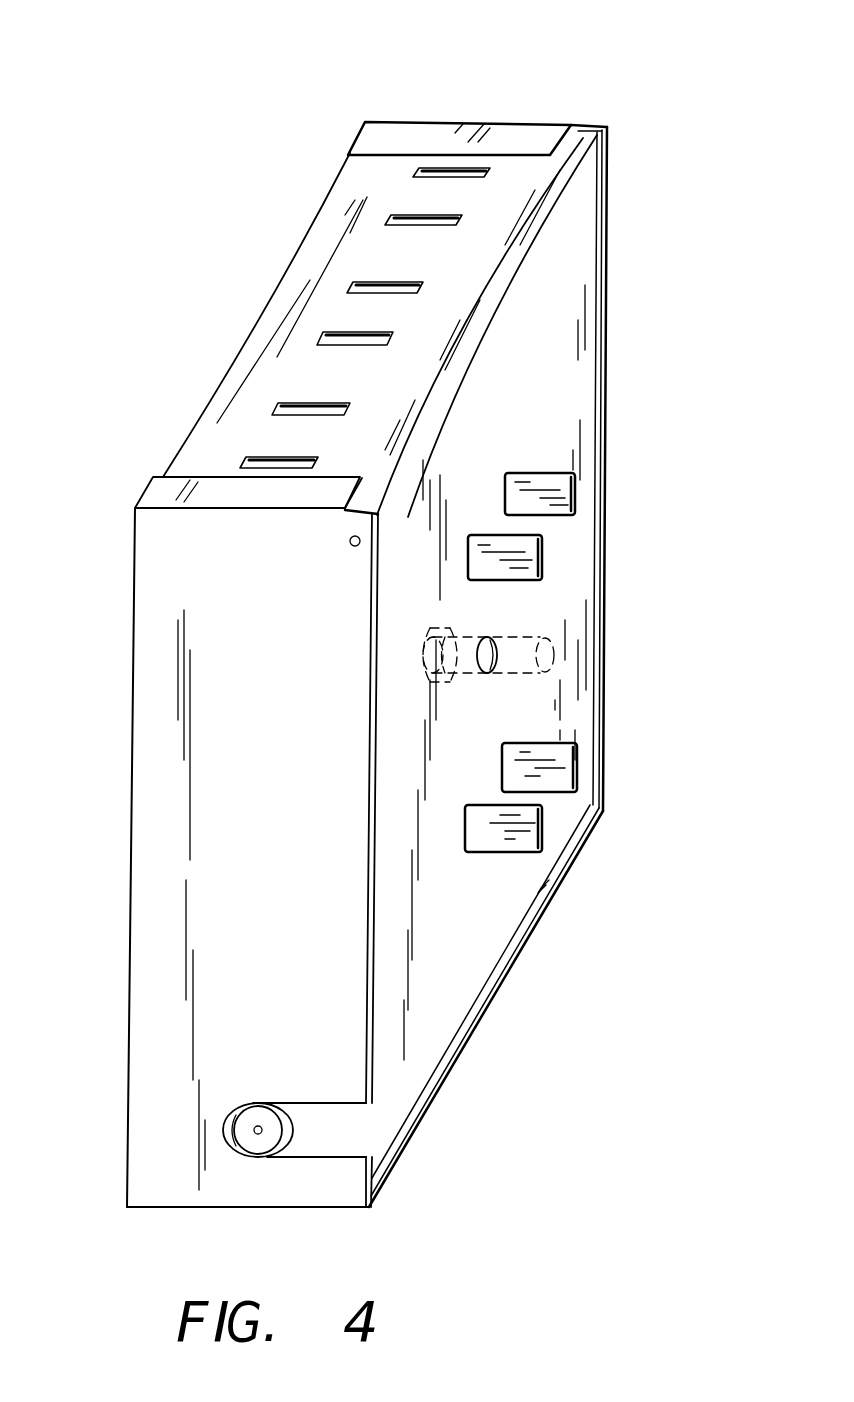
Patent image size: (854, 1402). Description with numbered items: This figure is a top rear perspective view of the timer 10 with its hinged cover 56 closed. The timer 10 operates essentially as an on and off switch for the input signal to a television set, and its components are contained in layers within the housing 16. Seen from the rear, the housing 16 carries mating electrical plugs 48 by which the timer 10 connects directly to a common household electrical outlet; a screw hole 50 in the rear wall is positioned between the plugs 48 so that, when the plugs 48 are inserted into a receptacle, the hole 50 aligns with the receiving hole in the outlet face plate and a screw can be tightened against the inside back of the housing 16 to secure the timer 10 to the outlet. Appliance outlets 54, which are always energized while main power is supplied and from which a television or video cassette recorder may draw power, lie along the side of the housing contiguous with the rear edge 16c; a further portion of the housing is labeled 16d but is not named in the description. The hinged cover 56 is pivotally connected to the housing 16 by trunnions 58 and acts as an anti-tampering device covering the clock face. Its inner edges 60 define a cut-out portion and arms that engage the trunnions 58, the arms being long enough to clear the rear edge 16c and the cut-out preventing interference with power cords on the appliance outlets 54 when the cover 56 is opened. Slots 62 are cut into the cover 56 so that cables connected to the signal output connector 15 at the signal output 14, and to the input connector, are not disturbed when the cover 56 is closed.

The timer 10 is at (760, 0).
The signal output 14 is at (250, 1090).
The signal output connector 15 is at (267, 1142).
The housing 16 is at (616, 320).
The rear edge of the housing 16c is at (323, 200).
The side wall of carrier 16d is at (556, 358).
The electrical plugs 48 is at (470, 535).
The screw hole 50 is at (487, 640).
The appliance outlets 54 is at (368, 224).
The hinged cover 56 is at (145, 598).
The trunnions 58 is at (366, 540).
The inner edges 60 is at (505, 157).
The slots 62 is at (338, 1135).